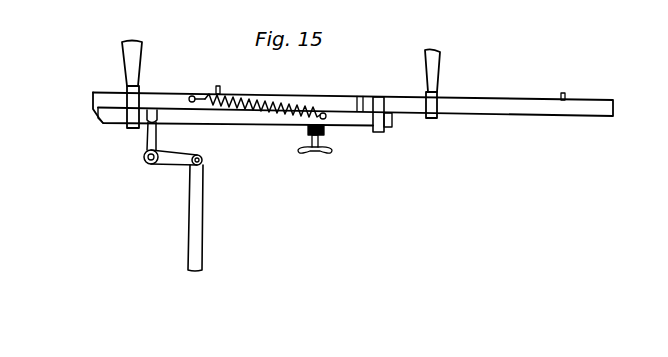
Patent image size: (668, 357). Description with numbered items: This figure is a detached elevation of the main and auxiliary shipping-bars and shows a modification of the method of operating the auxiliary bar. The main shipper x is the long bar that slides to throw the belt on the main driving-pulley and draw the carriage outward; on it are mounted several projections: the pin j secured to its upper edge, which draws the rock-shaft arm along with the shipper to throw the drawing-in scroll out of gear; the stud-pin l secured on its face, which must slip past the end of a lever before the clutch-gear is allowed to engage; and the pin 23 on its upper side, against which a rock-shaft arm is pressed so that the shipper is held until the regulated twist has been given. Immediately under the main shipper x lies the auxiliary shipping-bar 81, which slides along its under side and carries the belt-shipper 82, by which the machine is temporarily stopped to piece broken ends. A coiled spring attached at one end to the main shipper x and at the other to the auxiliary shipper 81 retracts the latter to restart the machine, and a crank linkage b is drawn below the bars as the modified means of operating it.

The main shipper x is at (353, 113).
The stud-pin l is at (360, 95).
The pin 23 is at (216, 84).
The pin j is at (559, 85).
The auxiliary shipping-bar 81 is at (270, 107).
The belt-shipper 82 is at (308, 139).
The crank pivot b is at (173, 190).